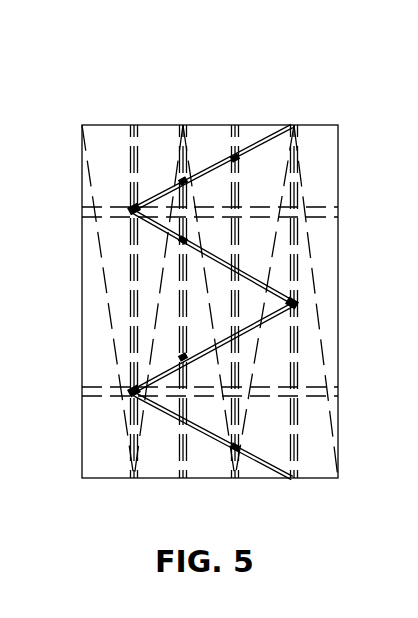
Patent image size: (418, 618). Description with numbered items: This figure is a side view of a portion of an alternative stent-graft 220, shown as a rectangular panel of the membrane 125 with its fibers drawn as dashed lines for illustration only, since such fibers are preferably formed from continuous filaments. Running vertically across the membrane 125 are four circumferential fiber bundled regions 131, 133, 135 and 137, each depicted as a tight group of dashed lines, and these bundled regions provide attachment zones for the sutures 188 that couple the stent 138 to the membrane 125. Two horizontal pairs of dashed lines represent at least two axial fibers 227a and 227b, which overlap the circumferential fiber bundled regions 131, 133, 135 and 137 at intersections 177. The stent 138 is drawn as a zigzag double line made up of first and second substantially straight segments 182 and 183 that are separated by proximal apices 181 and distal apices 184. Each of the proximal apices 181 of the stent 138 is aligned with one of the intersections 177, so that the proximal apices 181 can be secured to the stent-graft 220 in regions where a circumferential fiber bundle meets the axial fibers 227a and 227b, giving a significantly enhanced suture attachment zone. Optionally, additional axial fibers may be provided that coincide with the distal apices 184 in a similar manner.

The stent-graft 220 is at (92, 108).
The membrane 125 is at (320, 165).
The circumferential fiber bundled region 131 is at (134, 124).
The circumferential fiber bundled region 133 is at (183, 124).
The circumferential fiber bundled region 135 is at (236, 124).
The circumferential fiber bundled region 137 is at (297, 125).
The stent 138 is at (220, 158).
The intersection 177 is at (126, 202).
The distal apex 184 is at (299, 303).
The first substantially straight segment 182 is at (268, 320).
The second substantially straight segment 183 is at (266, 460).
The proximal apex 181 is at (126, 404).
The suture 188 is at (186, 398).
The axial fiber 227a is at (325, 213).
The axial fiber 227b is at (325, 213).